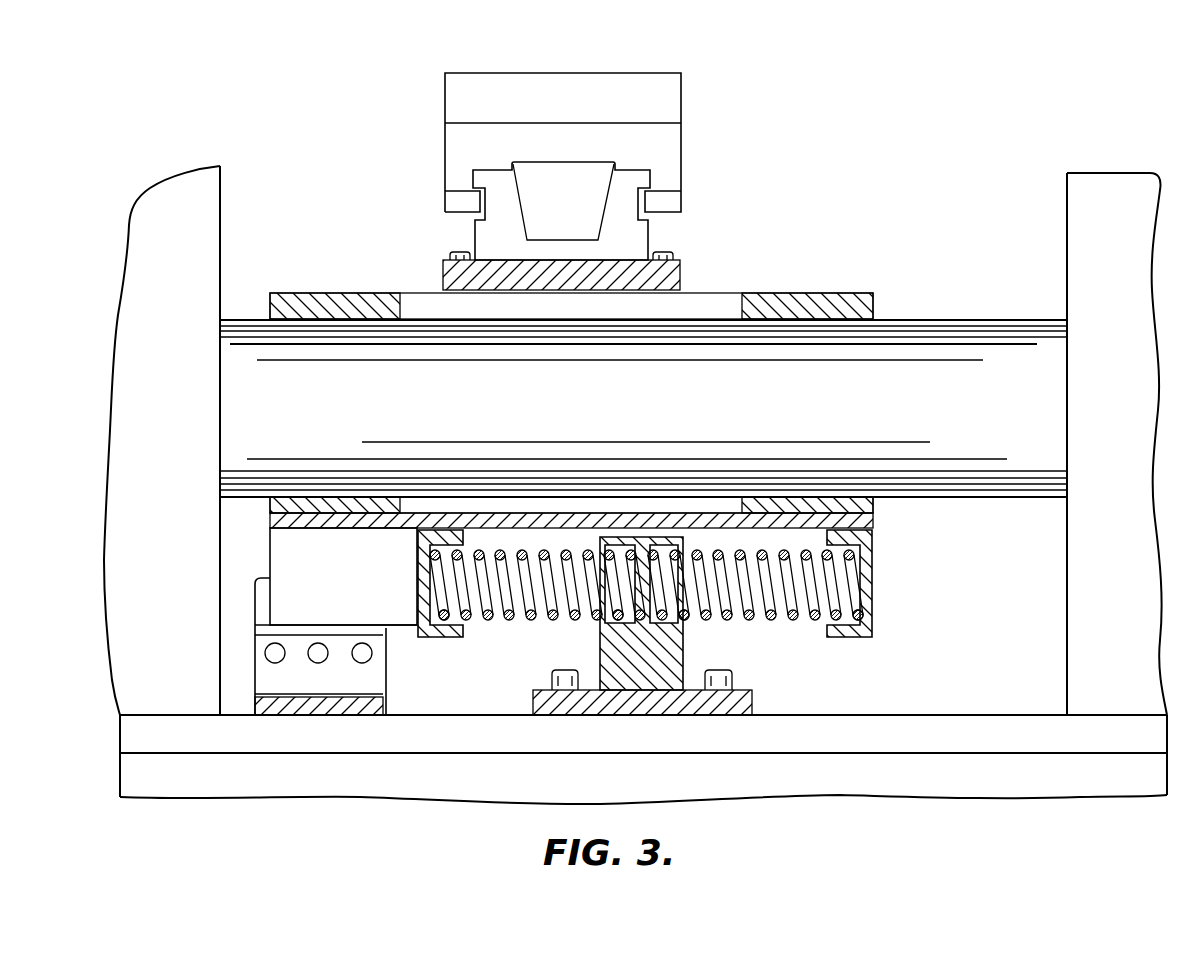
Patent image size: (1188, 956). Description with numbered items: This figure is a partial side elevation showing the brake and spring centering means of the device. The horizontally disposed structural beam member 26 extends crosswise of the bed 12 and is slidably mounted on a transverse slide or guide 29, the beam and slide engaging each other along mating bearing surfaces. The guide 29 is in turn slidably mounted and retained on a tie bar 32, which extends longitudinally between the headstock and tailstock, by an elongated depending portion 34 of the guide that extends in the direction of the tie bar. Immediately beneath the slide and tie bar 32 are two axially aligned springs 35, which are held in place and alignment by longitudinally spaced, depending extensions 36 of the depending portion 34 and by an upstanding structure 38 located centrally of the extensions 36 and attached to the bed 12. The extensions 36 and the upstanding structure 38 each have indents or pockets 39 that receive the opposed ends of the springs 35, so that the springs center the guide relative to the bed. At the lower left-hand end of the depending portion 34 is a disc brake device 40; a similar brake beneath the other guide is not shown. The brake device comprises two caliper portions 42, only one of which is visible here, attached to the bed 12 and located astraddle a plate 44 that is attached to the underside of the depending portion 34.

The bed 12 is at (910, 723).
The structural beam member 26 is at (676, 101).
The slide or guide 29 is at (642, 232).
The tie bar 32 is at (965, 322).
The depending portion 34 is at (822, 293).
The spring 35 is at (512, 620).
The depending extension 36 is at (433, 633).
The upstanding structure 38 is at (683, 667).
The indent or pocket 39 is at (453, 614).
The disc brake device 40 is at (356, 603).
The caliper portion 42 is at (260, 602).
The plate 44 is at (285, 548).